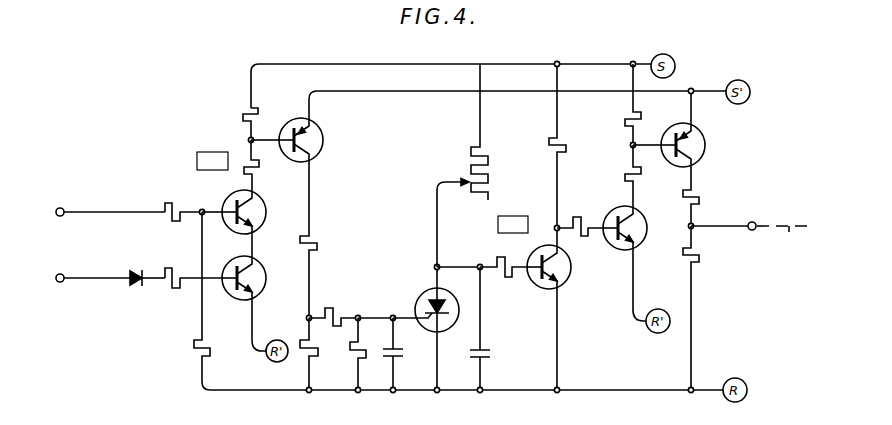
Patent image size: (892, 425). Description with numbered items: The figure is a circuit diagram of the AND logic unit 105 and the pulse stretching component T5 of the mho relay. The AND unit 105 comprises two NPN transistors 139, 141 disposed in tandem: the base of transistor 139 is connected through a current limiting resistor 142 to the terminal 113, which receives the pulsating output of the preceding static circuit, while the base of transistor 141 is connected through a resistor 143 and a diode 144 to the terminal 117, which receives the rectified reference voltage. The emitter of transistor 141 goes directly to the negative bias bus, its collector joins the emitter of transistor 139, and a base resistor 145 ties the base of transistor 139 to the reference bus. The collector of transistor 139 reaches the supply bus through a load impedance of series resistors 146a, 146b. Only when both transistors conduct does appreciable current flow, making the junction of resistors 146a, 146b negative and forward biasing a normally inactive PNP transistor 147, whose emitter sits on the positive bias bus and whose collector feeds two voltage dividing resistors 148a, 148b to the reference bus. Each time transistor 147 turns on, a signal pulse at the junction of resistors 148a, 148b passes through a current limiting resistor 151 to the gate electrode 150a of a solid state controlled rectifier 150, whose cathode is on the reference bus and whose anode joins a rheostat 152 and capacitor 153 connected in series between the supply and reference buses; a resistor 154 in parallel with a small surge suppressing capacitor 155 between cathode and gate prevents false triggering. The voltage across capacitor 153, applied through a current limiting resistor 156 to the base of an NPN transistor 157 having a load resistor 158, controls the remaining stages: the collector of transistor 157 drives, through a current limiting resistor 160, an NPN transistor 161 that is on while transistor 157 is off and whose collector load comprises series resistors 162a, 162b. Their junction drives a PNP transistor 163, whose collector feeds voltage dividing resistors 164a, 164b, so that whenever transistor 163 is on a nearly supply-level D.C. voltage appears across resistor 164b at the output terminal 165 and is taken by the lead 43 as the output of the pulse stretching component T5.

The terminal 113 is at (60, 208).
The terminal 117 is at (60, 282).
The current limiting resistor 142 is at (168, 206).
The resistor 143 is at (175, 290).
The diode 144 is at (137, 270).
The base resistor 145 is at (194, 352).
The AND logic unit 105 is at (212, 161).
The NPN transistor 139 is at (264, 222).
The NPN transistor 141 is at (264, 288).
The resistor 146a is at (260, 172).
The resistor 146b is at (243, 121).
The PNP transistor 147 is at (323, 141).
The voltage dividing resistor 148a is at (317, 243).
The voltage dividing resistor 148b is at (316, 355).
The current limiting resistor 151 is at (330, 309).
The resistor 154 is at (366, 354).
The surge suppressing capacitor 155 is at (404, 354).
The solid state controlled rectifier 150 is at (462, 285).
The gate electrode 150a is at (420, 316).
The rheostat 152 is at (470, 150).
The capacitor 153 is at (490, 354).
The current limiting resistor 156 is at (508, 276).
The NPN transistor 157 is at (568, 282).
The load resistor 158 is at (550, 143).
The current limiting resistor 160 is at (585, 236).
The NPN transistor 161 is at (642, 240).
The resistor 162a is at (625, 178).
The resistor 162b is at (625, 123).
The PNP transistor 163 is at (706, 140).
The voltage dividing resistor 164a is at (699, 200).
The voltage dividing resistor 164b is at (699, 262).
The output terminal 165 is at (755, 222).
The lead 43 is at (789, 232).
The pulse stretching component T5 is at (513, 224).